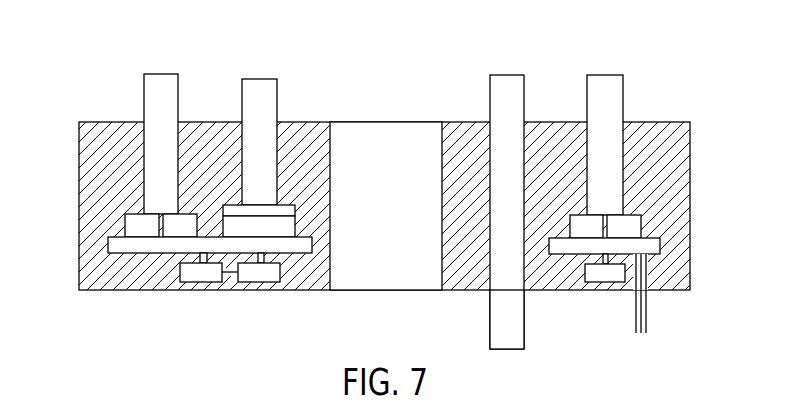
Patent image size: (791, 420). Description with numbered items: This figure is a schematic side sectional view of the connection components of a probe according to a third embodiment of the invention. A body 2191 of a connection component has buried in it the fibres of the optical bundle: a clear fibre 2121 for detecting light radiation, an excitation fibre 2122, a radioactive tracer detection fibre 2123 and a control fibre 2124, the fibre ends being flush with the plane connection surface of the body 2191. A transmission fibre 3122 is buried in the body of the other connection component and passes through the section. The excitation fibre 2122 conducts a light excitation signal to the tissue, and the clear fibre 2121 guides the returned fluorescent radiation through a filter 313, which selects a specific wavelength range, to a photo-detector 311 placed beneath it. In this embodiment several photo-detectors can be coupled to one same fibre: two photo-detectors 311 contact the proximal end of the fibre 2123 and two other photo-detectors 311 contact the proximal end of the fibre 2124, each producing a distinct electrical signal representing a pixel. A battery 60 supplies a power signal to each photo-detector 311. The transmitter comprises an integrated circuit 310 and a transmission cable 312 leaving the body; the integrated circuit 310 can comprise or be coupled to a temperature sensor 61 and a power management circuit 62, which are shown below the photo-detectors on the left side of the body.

The body 2191 is at (463, 143).
The radioactive tracer detection fibre 2123 is at (160, 95).
The fibre for detecting light radiation 2121 is at (260, 97).
The excitation fibre 2122 is at (507, 97).
The control fibre 2124 is at (605, 98).
The transmission fibre 3122 is at (507, 335).
The filter 313 is at (288, 210).
The photo-detector 311 is at (140, 225).
The integrated circuit 310 is at (647, 248).
The transmission cable 312 is at (642, 337).
The battery 60 is at (607, 277).
The temperature sensor 61 is at (257, 275).
The power management circuit 62 is at (198, 275).